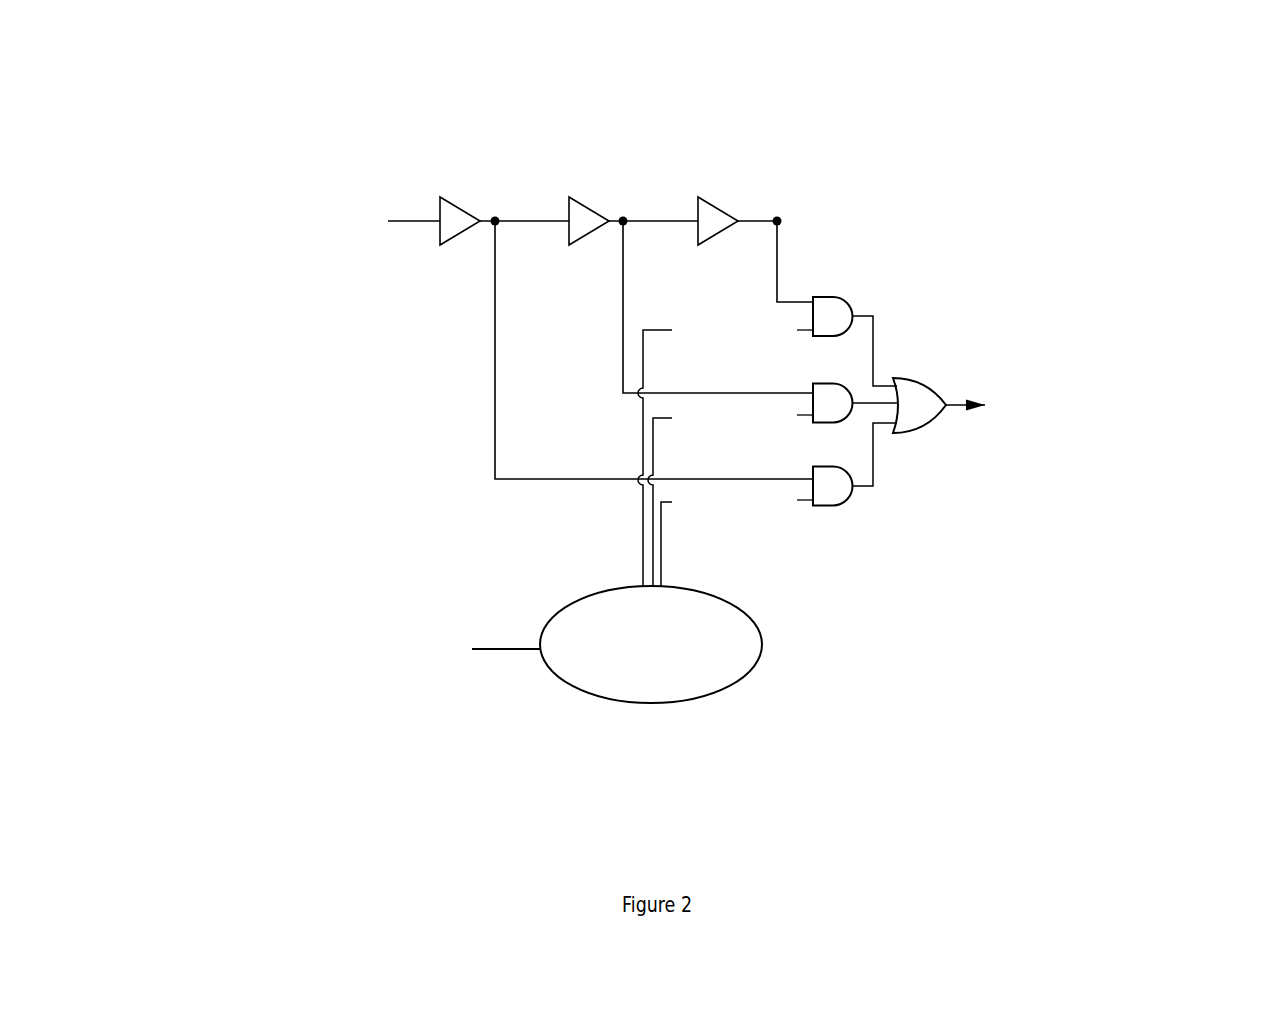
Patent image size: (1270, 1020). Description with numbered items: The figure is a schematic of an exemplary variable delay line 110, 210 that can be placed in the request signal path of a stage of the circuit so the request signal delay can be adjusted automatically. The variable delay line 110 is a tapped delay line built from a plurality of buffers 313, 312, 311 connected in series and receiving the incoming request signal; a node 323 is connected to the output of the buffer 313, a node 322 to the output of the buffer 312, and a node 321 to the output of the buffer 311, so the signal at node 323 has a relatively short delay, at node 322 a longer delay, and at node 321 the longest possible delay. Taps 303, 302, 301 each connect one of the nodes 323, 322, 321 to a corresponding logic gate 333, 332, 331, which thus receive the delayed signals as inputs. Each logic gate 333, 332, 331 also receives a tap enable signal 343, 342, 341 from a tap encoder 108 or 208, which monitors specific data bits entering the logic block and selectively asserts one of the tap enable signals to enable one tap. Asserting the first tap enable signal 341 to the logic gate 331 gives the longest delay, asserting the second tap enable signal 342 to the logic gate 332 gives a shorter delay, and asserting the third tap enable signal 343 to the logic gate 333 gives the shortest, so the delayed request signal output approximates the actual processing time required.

The first variable delay line 110 is at (244, 81).
The second variable delay line 210 is at (714, 434).
The first tap encoder 108 is at (629, 644).
The second tap encoder 208 is at (762, 642).
The buffer 311 is at (716, 197).
The buffer 312 is at (584, 197).
The buffer 313 is at (452, 197).
The node 321 is at (777, 217).
The node 322 is at (625, 217).
The node 323 is at (497, 217).
The tap 301 is at (776, 279).
The tap 302 is at (622, 359).
The tap 303 is at (494, 424).
The logic gate 331 is at (838, 296).
The logic gate 332 is at (845, 383).
The logic gate 333 is at (848, 466).
The first tap enable signal 341 is at (695, 325).
The second tap enable signal 342 is at (738, 433).
The third tap enable signal 343 is at (725, 516).